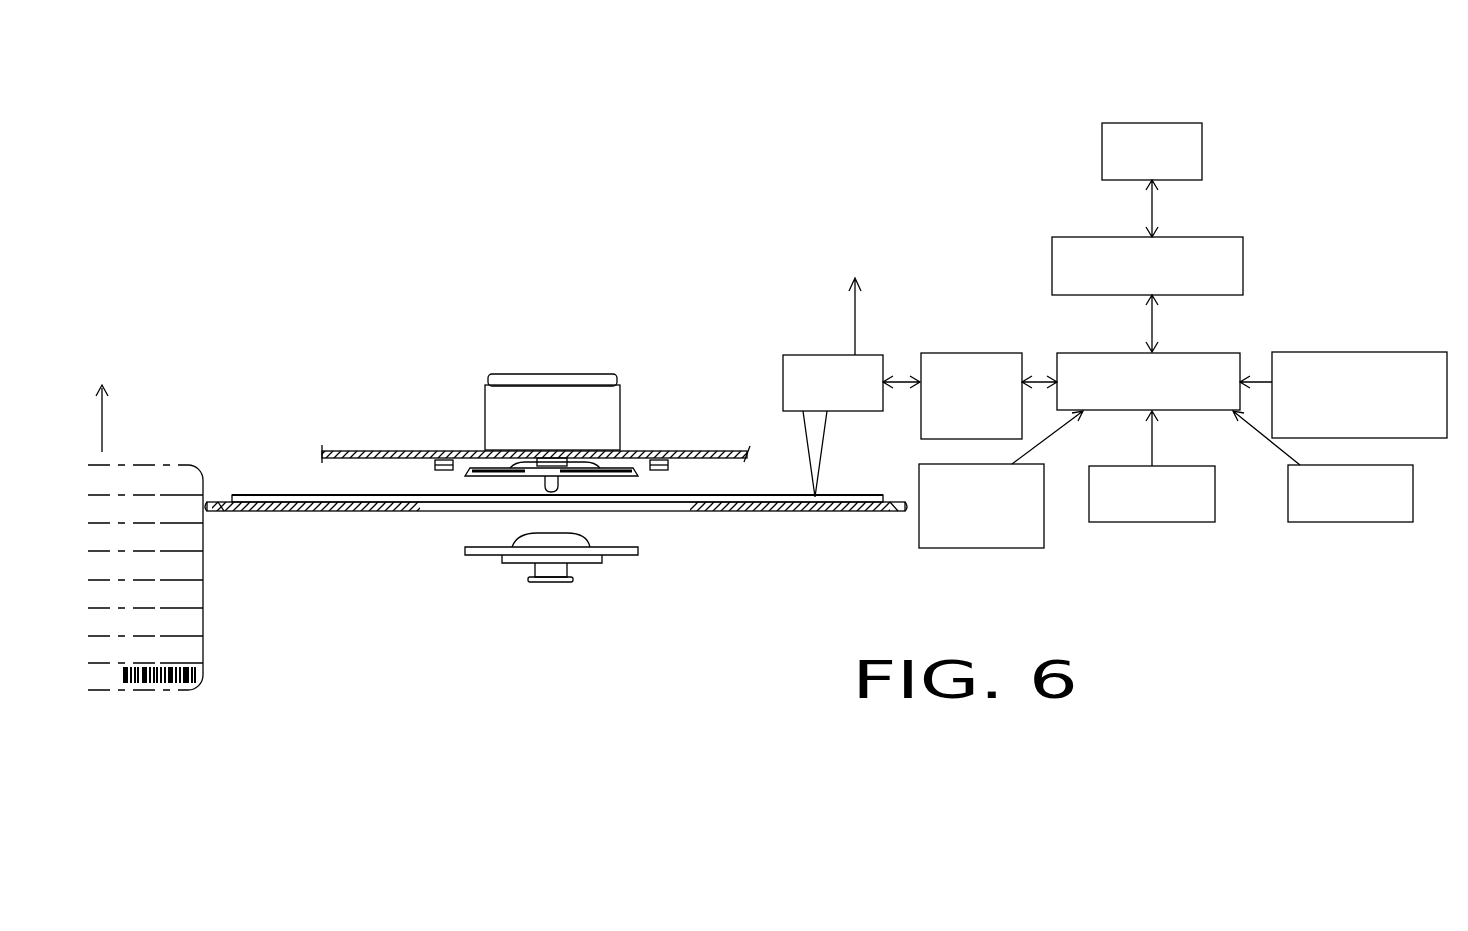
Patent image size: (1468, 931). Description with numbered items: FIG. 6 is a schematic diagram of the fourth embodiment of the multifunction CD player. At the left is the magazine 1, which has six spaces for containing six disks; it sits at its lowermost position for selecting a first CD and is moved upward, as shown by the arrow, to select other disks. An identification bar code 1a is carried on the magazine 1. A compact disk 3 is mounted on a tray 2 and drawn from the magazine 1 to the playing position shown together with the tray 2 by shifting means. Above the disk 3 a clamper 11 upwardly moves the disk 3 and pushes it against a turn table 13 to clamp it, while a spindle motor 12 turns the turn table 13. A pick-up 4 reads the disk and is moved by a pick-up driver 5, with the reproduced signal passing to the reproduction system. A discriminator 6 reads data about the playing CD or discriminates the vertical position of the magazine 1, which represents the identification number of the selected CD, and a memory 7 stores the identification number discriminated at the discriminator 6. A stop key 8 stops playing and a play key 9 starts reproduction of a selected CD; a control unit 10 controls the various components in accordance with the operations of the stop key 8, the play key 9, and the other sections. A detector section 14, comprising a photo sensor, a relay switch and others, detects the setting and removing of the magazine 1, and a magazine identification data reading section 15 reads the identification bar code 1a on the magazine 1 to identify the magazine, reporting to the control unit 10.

The magazine 1 is at (182, 465).
The identification bar code 1a is at (198, 688).
The tray 2 is at (363, 512).
The compact disk 3 is at (336, 495).
The pick-up 4 is at (796, 355).
The pick-up driver 5 is at (981, 354).
The discriminator 6 is at (1244, 267).
The memory 7 is at (1204, 152).
The stop key 8 is at (1088, 494).
The play key 9 is at (1370, 522).
The control unit 10 is at (1227, 354).
The clamper 11 is at (498, 552).
The spindle motor 12 is at (588, 378).
The turn table 13 is at (467, 471).
The detector section 14 is at (1022, 548).
The magazine identification data reading section 15 is at (1418, 352).